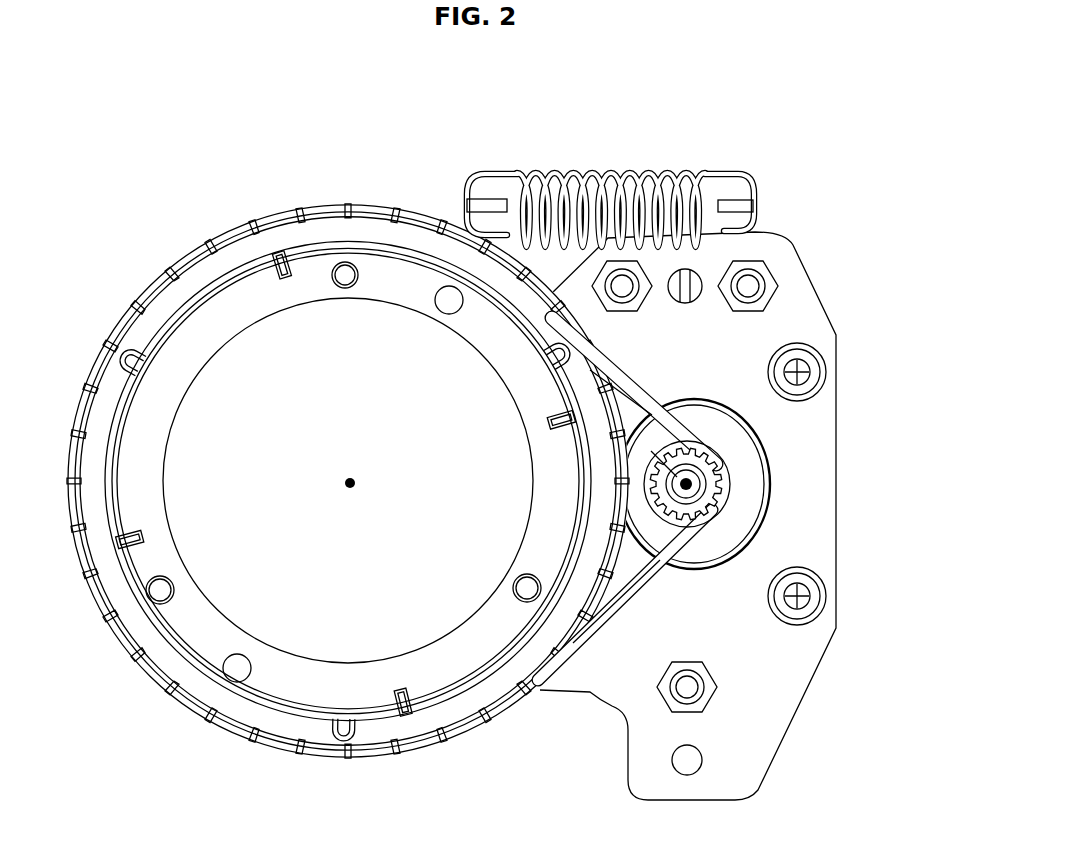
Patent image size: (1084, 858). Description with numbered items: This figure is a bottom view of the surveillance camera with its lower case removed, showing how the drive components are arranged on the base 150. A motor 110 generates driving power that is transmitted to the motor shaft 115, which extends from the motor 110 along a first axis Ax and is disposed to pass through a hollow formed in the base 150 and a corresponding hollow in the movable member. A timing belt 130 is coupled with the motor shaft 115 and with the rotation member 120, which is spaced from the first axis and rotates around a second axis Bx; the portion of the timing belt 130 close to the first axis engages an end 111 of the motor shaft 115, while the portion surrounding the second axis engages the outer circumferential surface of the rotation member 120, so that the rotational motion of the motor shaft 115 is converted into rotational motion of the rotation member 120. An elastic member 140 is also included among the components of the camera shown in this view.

The motor 110 is at (752, 497).
The end of the motor shaft 111 is at (718, 465).
The motor shaft 115 is at (716, 461).
The rotation member 120 is at (183, 287).
The timing belt 130 is at (716, 527).
The elastic member 140 is at (588, 173).
The base 150 is at (825, 533).